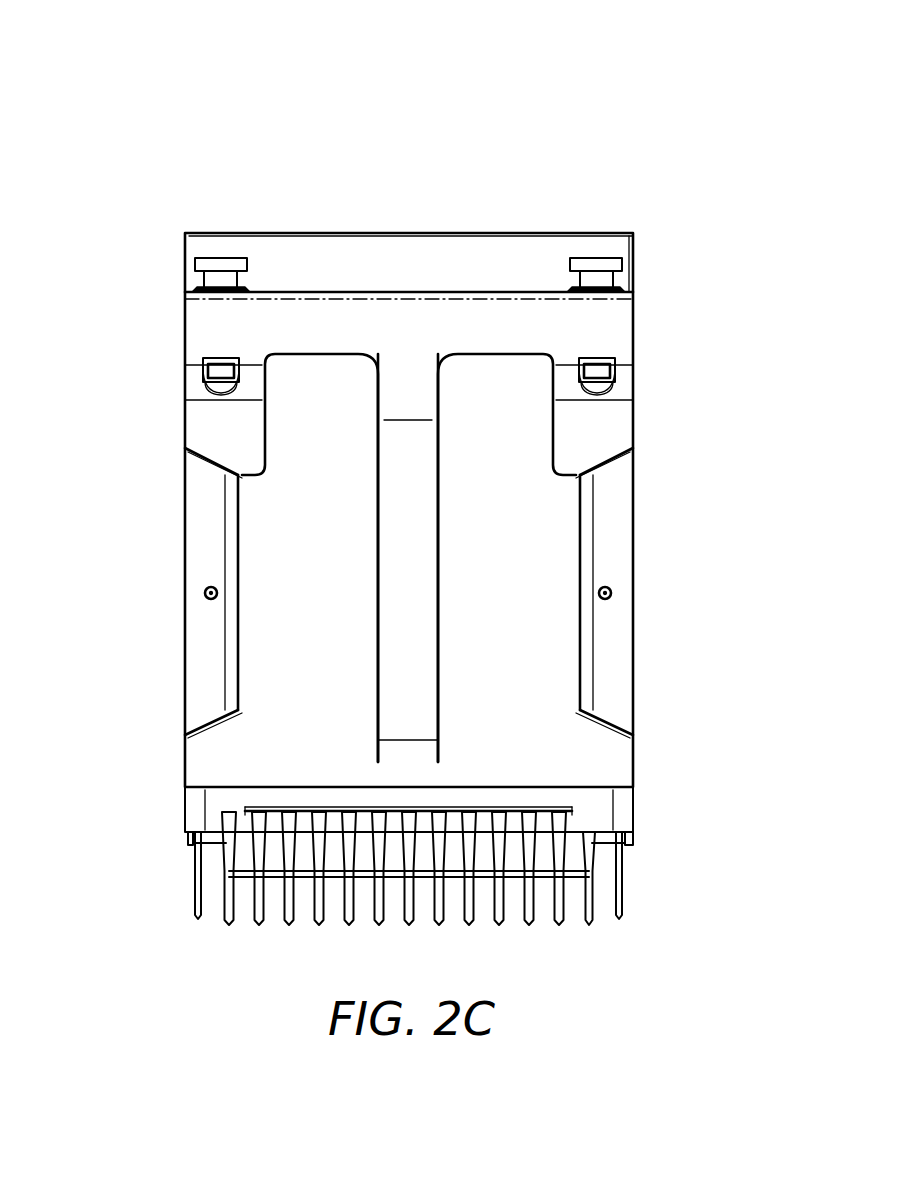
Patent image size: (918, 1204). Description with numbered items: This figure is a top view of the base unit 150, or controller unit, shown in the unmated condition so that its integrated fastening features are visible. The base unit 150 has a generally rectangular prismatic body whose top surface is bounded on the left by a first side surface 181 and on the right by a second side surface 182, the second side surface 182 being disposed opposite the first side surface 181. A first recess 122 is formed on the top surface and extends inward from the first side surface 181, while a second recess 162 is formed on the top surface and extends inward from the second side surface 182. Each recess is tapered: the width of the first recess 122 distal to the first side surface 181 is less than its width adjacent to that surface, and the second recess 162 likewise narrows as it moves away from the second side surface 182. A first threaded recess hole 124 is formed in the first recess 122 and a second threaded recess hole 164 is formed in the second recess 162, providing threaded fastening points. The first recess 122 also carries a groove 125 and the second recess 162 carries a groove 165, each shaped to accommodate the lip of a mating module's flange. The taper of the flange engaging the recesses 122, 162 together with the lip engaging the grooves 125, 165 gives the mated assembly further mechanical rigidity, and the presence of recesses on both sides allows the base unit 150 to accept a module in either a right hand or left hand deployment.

The base unit 150 is at (418, 467).
The first side surface 181 is at (133, 360).
The second side surface 182 is at (662, 366).
The groove 165 is at (558, 511).
The first recess 122 is at (166, 594).
The first threaded recess hole 124 is at (153, 622).
The second recess 162 is at (650, 594).
The second threaded recess hole 164 is at (662, 622).
The groove 125 is at (267, 673).